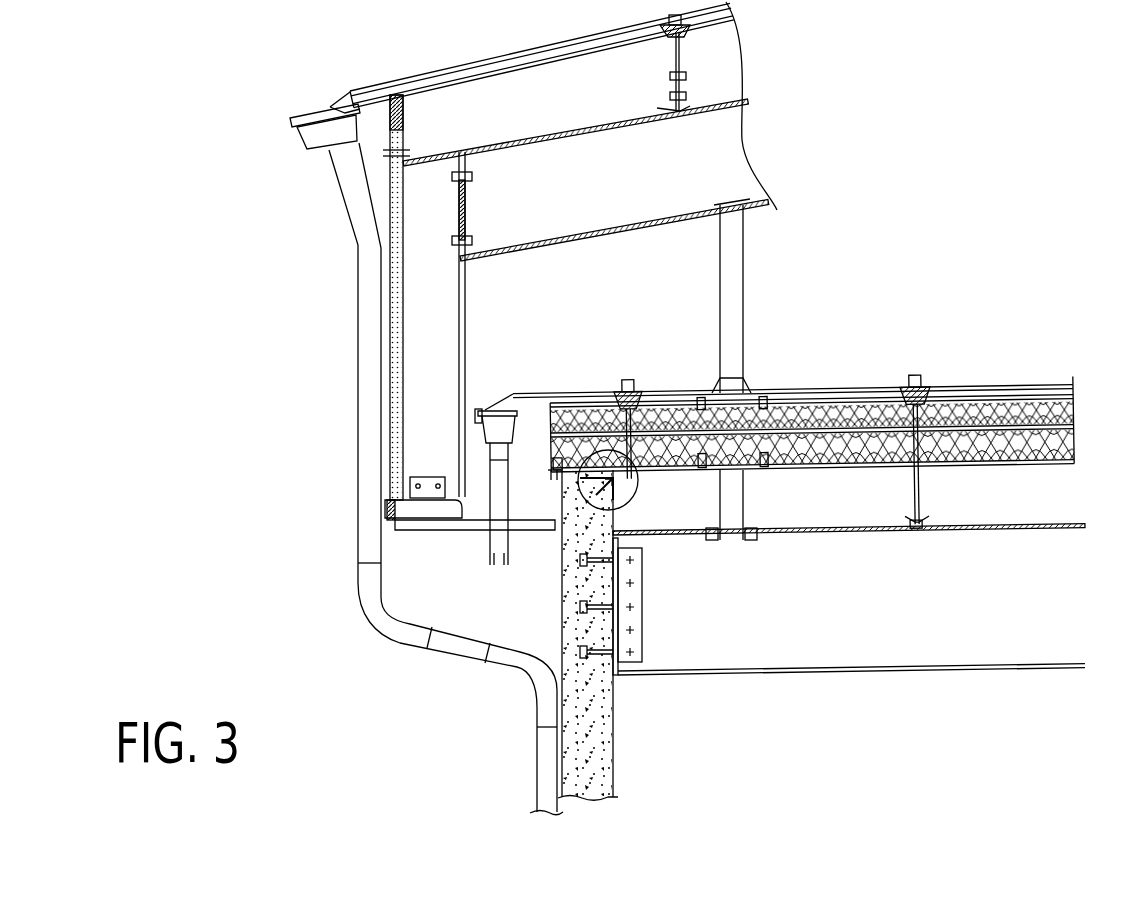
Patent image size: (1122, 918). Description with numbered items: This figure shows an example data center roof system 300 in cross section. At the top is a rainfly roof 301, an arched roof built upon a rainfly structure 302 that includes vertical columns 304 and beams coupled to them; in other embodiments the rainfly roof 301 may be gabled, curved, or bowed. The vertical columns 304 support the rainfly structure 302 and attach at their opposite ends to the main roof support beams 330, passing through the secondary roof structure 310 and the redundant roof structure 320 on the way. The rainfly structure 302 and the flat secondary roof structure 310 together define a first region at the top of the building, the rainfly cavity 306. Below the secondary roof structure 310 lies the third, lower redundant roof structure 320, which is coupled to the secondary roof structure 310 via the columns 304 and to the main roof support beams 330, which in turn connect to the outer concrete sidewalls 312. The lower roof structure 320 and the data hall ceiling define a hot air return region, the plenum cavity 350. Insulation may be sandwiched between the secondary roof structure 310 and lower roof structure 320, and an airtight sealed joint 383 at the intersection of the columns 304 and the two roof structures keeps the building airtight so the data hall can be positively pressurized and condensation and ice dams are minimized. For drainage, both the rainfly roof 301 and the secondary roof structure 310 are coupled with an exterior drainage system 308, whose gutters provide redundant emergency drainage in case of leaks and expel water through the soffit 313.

The roof system 300 is at (186, 70).
The rainfly roof 301 is at (463, 64).
The rainfly structure 302 is at (728, 305).
The vertical columns 304 is at (745, 327).
The rainfly cavity 306 is at (901, 219).
The exterior drainage system 308 is at (298, 142).
The secondary roof structure 310 is at (838, 392).
The outer concrete sidewalls 312 is at (616, 744).
The soffit 313 is at (465, 540).
The redundant roof structure 320 is at (990, 465).
The main roof support beams 330 is at (826, 619).
The plenum cavity 350 is at (826, 752).
The airtight sealed joint 383 is at (638, 499).